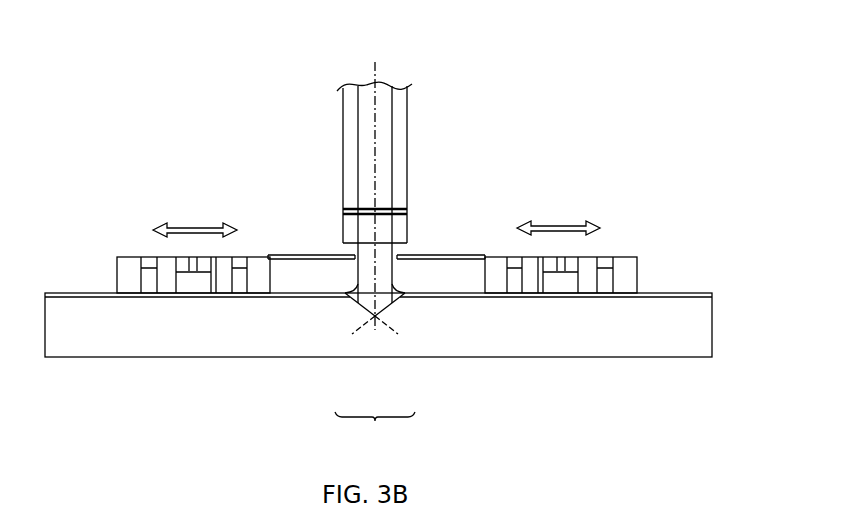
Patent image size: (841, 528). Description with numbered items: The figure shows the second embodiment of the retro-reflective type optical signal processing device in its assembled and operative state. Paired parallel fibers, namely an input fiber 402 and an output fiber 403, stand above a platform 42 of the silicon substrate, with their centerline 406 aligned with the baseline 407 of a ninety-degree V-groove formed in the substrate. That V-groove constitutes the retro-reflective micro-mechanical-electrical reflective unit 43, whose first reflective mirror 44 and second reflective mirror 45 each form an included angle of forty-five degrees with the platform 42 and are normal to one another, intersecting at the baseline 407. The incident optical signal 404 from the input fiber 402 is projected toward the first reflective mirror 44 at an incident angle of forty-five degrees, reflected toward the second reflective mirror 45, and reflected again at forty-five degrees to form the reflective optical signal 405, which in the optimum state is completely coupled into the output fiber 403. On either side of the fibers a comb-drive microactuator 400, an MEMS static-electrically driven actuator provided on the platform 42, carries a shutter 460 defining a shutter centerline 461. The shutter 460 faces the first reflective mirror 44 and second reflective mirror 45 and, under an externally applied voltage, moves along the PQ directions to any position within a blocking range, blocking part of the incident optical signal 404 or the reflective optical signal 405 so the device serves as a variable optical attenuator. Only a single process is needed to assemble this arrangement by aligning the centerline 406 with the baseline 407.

The platform 42 is at (676, 292).
The retro-reflective micro-mechanical-electrical reflective unit 43 is at (375, 425).
The first reflective mirror 44 is at (356, 322).
The second reflective mirror 45 is at (394, 322).
The comb-drive microactuator 400 is at (97, 235).
The input fiber 402 is at (345, 123).
The output fiber 403 is at (403, 138).
The incident optical signal 404 is at (358, 268).
The reflective optical signal 405 is at (393, 270).
The centerline 406 is at (376, 110).
The baseline 407 is at (375, 324).
The shutter 460 is at (287, 255).
The shutter centerline 461 is at (325, 253).